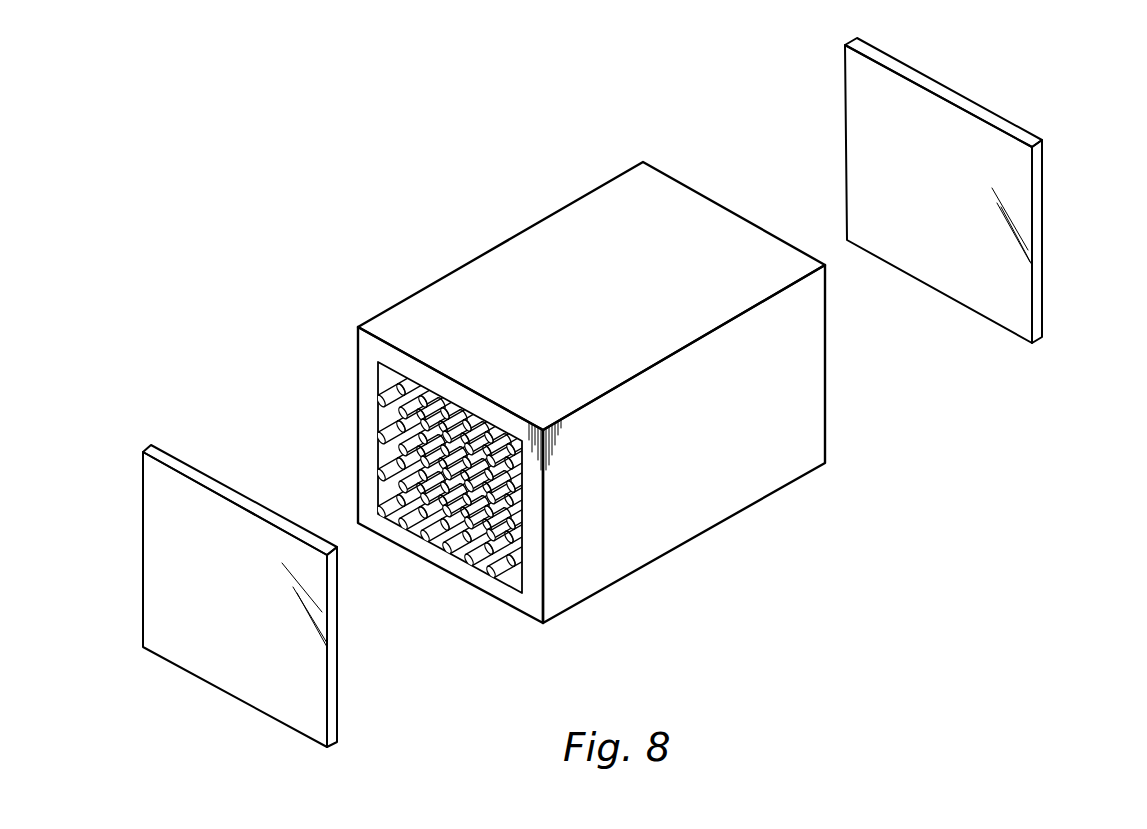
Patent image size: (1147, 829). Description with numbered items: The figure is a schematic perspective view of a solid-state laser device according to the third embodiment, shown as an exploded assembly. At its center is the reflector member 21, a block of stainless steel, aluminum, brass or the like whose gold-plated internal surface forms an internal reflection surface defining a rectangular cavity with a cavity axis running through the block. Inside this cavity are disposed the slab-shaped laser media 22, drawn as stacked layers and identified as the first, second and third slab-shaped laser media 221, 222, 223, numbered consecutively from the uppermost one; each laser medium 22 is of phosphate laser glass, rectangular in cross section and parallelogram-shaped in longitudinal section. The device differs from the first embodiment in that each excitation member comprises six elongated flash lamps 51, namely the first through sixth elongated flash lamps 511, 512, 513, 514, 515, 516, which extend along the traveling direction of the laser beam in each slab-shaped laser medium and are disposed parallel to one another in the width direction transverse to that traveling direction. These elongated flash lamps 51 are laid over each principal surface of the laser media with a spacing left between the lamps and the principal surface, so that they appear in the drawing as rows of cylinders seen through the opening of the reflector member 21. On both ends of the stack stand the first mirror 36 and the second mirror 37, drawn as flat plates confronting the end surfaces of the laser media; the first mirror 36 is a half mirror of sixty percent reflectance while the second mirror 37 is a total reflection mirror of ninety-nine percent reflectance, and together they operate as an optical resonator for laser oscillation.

The reflector member 21 is at (733, 503).
The slab-shaped laser medium 22 is at (556, 506).
The first slab-shaped laser medium 221 is at (505, 470).
The second slab-shaped laser medium 222 is at (505, 506).
The third slab-shaped laser medium 223 is at (505, 543).
The elongated flash lamp 51 is at (476, 445).
The first elongated flash lamp 511 is at (406, 383).
The second elongated flash lamp 512 is at (430, 397).
The third elongated flash lamp 513 is at (455, 407).
The fourth elongated flash lamp 514 is at (480, 415).
The fifth elongated flash lamp 515 is at (493, 432).
The sixth elongated flash lamp 516 is at (523, 437).
The first mirror 36 is at (333, 715).
The second mirror 37 is at (1038, 302).